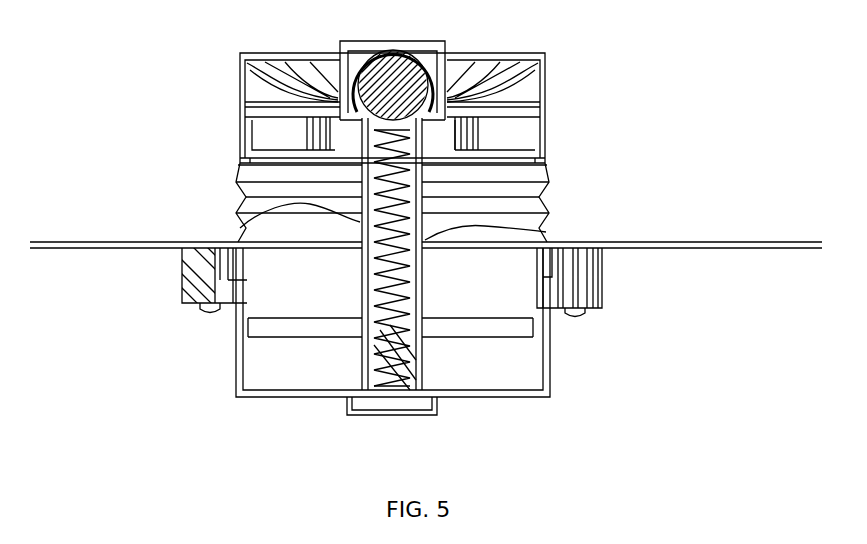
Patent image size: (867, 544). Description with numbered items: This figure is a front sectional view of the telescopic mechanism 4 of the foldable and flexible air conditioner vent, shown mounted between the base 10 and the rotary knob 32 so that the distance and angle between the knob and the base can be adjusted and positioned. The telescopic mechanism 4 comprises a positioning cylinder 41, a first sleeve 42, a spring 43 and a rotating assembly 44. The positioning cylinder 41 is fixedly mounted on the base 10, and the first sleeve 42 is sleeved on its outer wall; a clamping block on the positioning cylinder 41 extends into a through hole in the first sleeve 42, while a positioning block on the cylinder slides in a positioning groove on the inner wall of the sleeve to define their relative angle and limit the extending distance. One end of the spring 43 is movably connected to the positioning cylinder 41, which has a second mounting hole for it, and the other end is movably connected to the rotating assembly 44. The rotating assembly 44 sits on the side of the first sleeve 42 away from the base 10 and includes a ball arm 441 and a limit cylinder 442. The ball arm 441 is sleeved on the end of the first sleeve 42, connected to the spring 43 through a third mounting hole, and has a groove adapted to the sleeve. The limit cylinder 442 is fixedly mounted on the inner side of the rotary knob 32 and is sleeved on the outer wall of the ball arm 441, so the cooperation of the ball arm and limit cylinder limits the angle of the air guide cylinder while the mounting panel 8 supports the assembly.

The telescopic mechanism 4 is at (137, 77).
The mounting panel 8 is at (549, 234).
The base 10 is at (550, 396).
The rotary knob 32 is at (450, 47).
The positioning cylinder 41 is at (367, 340).
The first sleeve 42 is at (233, 226).
The spring 43 is at (367, 378).
The rotating assembly 44 is at (173, 36).
The ball arm 441 is at (300, 104).
The limit cylinder 442 is at (342, 46).